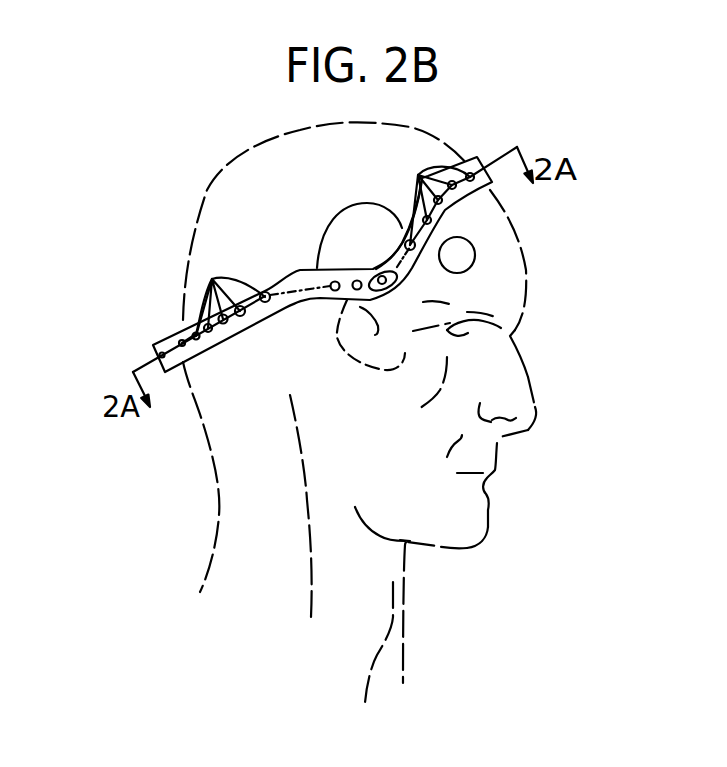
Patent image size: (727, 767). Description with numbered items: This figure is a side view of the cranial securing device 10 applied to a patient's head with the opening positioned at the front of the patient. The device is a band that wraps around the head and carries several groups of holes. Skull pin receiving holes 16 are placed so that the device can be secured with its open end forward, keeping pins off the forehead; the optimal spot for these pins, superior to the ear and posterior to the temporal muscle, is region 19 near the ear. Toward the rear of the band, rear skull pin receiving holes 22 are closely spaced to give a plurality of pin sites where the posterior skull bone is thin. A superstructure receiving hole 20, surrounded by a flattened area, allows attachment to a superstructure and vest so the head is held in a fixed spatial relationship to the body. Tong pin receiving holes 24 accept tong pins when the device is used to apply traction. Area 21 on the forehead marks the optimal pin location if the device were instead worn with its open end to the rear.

The cranial securing device 10 is at (291, 277).
The skull pin receiving holes 16 is at (212, 279).
The region 19 is at (341, 212).
The superstructure receiving holes 20 is at (377, 268).
The area 21 is at (476, 256).
The rear skull pin receiving holes 22 is at (160, 356).
The tong pin receiving holes 24 is at (402, 223).